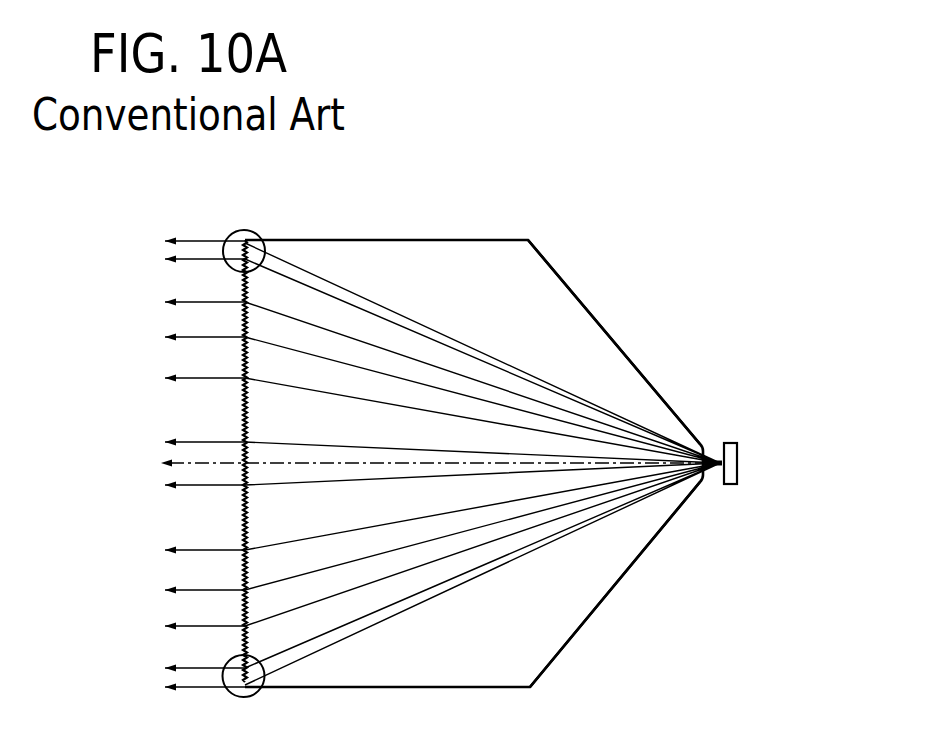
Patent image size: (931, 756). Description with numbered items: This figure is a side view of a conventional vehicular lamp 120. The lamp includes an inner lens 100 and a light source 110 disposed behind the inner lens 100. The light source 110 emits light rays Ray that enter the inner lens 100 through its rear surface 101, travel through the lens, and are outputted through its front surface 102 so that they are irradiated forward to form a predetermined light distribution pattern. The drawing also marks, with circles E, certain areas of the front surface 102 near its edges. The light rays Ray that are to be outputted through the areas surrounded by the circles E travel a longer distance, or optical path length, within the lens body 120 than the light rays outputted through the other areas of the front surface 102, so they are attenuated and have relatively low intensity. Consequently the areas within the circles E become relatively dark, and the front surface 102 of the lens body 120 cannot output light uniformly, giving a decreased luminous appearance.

The vehicular lamp 120 is at (488, 161).
The inner lens 100 is at (365, 240).
The rear surface 101 is at (593, 317).
The front surface 102 is at (245, 403).
The light source 110 is at (738, 442).
The light rays Ray is at (313, 325).
The circles E is at (228, 232).